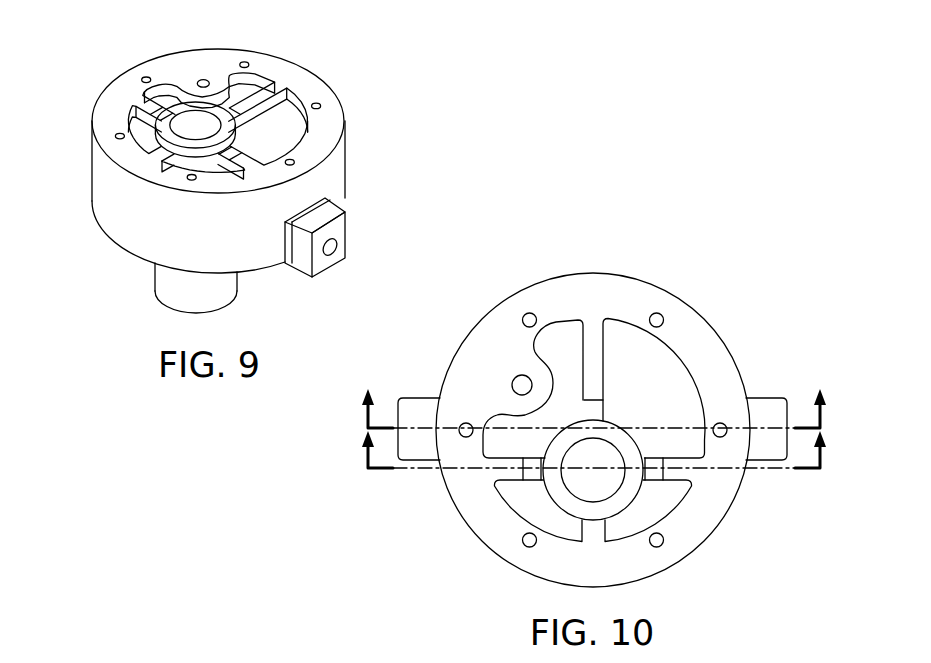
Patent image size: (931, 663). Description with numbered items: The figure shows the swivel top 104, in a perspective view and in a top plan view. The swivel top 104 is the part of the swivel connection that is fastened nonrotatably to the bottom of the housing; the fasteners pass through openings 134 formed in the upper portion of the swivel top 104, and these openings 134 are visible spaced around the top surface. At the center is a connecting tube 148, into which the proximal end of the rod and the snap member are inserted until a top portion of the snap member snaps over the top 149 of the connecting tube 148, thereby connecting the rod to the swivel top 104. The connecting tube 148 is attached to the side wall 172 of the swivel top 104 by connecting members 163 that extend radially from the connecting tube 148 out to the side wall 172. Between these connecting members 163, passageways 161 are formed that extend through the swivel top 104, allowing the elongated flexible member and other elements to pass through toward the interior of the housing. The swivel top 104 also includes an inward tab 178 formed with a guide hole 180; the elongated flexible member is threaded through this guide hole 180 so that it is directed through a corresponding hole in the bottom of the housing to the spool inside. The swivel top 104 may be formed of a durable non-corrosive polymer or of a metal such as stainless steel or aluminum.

In FIG. 9, the swivel top 104 is at (347, 77).
In FIG. 10, the swivel top 104 is at (742, 342).
In FIG. 9, the openings 134 is at (245, 61).
In FIG. 10, the openings 134 is at (663, 314).
In FIG. 9, the connecting tube 148 is at (238, 293).
In FIG. 10, the connecting tube 148 is at (638, 493).
In FIG. 9, the top of the connecting tube 149 is at (137, 127).
In FIG. 9, the passageways 161 is at (273, 147).
In FIG. 10, the passageways 161 is at (687, 412).
In FIG. 10, the connecting members 163 is at (596, 358).
In FIG. 9, the side wall 172 is at (112, 222).
In FIG. 10, the side wall 172 is at (585, 272).
In FIG. 9, the inward tab 178 is at (192, 88).
In FIG. 10, the inward tab 178 is at (557, 346).
In FIG. 9, the guide hole 180 is at (204, 79).
In FIG. 10, the guide hole 180 is at (519, 376).